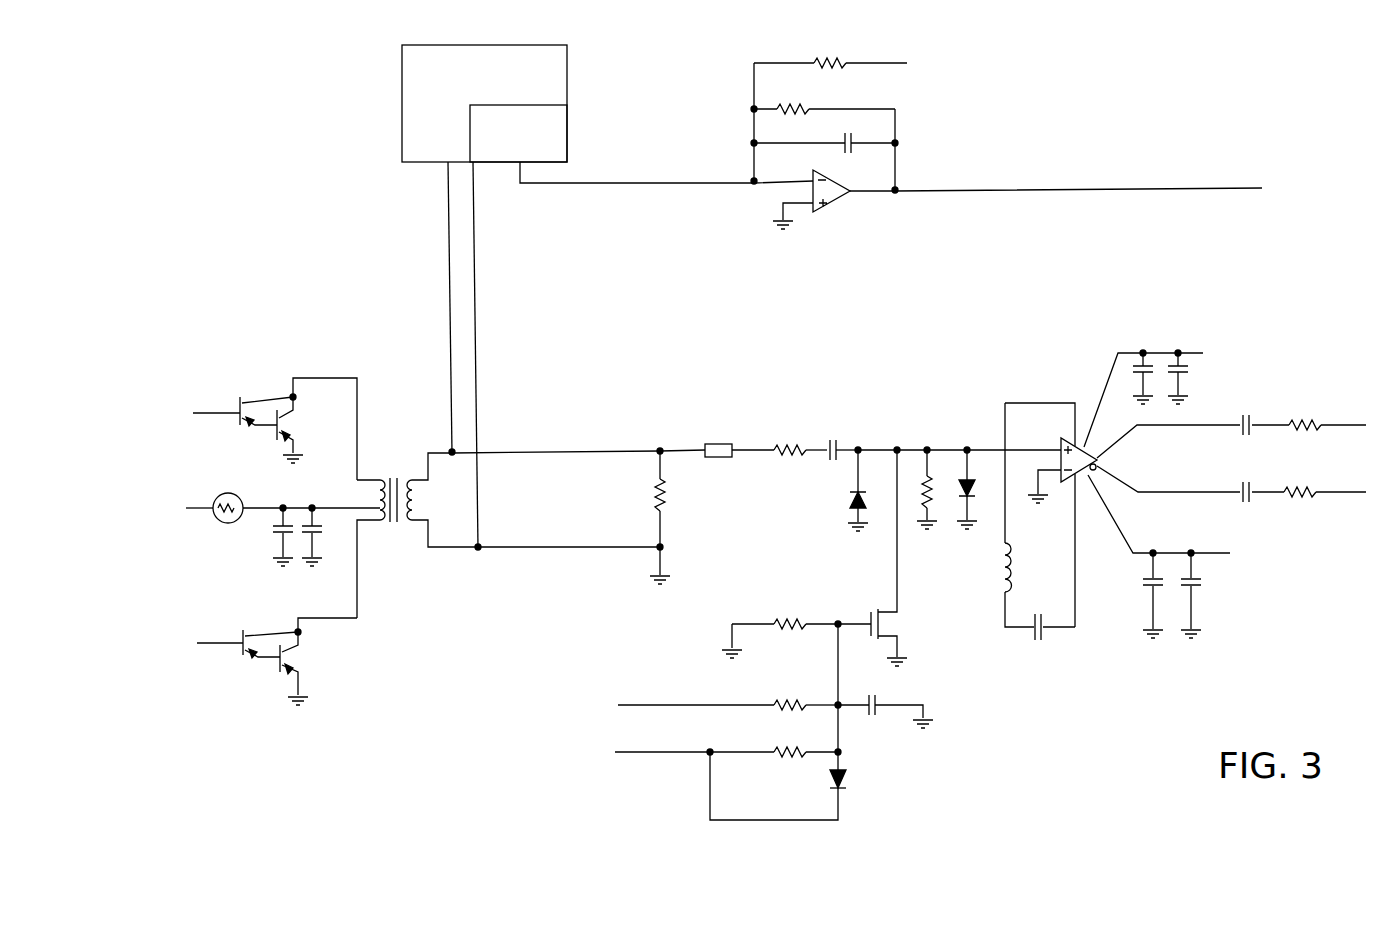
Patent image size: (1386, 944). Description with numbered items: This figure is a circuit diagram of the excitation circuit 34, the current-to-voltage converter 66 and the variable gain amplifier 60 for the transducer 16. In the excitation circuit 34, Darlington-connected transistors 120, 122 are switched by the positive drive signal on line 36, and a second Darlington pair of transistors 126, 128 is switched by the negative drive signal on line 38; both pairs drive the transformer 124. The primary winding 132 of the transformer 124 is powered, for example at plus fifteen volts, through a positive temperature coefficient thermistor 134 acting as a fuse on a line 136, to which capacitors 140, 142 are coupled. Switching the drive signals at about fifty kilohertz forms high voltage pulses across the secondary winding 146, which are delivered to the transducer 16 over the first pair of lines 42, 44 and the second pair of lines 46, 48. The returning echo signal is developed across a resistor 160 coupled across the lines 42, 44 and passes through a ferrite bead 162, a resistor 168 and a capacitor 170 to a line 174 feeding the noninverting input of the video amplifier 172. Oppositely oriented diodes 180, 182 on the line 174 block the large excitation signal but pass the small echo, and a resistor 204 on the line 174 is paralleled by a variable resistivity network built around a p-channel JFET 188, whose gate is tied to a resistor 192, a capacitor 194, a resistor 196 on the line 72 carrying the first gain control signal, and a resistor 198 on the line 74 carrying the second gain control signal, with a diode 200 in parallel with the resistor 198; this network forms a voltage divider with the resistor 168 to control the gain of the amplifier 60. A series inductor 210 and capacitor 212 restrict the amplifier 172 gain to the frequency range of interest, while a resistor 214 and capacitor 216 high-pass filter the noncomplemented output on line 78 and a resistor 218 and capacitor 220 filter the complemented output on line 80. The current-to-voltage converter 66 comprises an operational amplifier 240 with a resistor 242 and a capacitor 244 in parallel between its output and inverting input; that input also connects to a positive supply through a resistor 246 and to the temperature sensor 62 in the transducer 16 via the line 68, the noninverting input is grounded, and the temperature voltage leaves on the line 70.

The transducer 16 is at (567, 77).
The temperature sensor 62 is at (567, 131).
The current-to-voltage converter 66 is at (813, 125).
The resistor 246 is at (822, 58).
The resistor 242 is at (785, 104).
The capacitor 244 is at (851, 133).
The line 68 is at (715, 181).
The operational amplifier 240 is at (829, 203).
The line 70 is at (1085, 188).
The line of second pair 46 is at (447, 288).
The line of second pair 48 is at (493, 284).
The excitation circuit 34 is at (250, 350).
The first transistor 120 is at (239, 399).
The line 36 is at (218, 414).
The second transistor 122 is at (275, 438).
The line 136 is at (343, 506).
The transformer 124 is at (414, 516).
The secondary winding 146 is at (443, 506).
The line of first pair 42 is at (524, 452).
The line of first pair 44 is at (452, 550).
The resistor 160 is at (667, 498).
The ferrite bead 162 is at (714, 457).
The resistor 168 is at (806, 455).
The capacitor 170 is at (840, 440).
The diode 180 is at (850, 500).
The resistor 204 is at (920, 481).
The line 174 is at (942, 449).
The diode 182 is at (976, 491).
The video amplifier 172 is at (1078, 440).
The capacitor 216 is at (1251, 415).
The resistor 214 is at (1310, 420).
The line 78 is at (1350, 423).
The capacitor 220 is at (1252, 482).
The resistor 218 is at (1303, 485).
The line 80 is at (1348, 494).
The positive temperature coefficient thermistor 134 is at (229, 523).
The capacitor 140 is at (280, 536).
The capacitor 142 is at (321, 533).
The primary winding 132 is at (385, 524).
The transistor 126 is at (241, 631).
The line 38 is at (220, 644).
The transistor 128 is at (278, 666).
The resistor 192 is at (792, 620).
The p-channel junction field-effect transistor 188 is at (890, 611).
The inductor 210 is at (1012, 579).
The capacitor 212 is at (1050, 634).
The line 72 is at (671, 705).
The resistor 196 is at (788, 695).
The capacitor 194 is at (916, 694).
The line 74 is at (670, 752).
The resistor 198 is at (790, 759).
The diode 200 is at (848, 785).
The variable gain amplifier 60 is at (1095, 736).